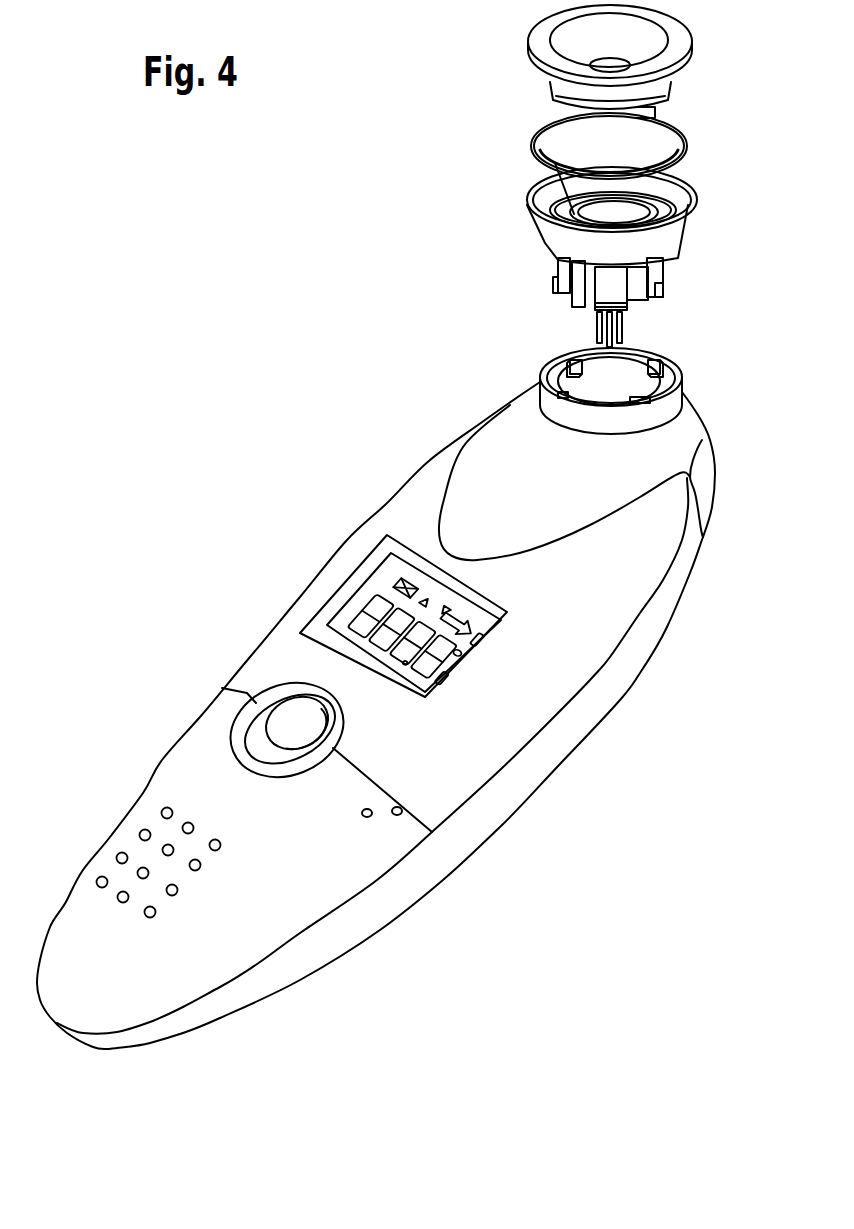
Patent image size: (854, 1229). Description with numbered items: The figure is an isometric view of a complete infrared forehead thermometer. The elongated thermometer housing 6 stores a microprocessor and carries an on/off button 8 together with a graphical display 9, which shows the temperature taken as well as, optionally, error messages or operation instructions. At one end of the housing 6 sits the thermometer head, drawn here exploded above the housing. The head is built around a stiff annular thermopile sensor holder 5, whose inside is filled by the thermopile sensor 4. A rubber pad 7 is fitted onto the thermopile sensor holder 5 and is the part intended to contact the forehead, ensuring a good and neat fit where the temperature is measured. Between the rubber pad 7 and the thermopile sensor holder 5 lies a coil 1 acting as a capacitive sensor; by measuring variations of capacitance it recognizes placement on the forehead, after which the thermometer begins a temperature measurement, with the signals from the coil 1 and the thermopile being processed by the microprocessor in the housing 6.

The coil 1 is at (535, 137).
The thermopile sensor 4 is at (637, 283).
The thermopile sensor holder 5 is at (553, 233).
The thermometer housing 6 is at (607, 597).
The rubber pad 7 is at (548, 48).
The on/off button 8 is at (293, 722).
The graphical display 9 is at (348, 612).